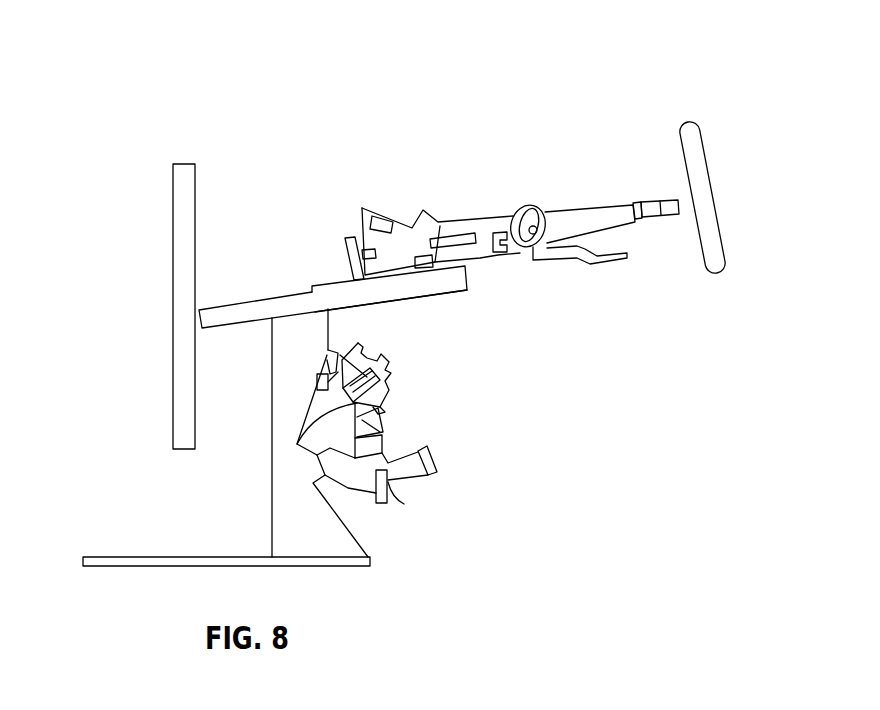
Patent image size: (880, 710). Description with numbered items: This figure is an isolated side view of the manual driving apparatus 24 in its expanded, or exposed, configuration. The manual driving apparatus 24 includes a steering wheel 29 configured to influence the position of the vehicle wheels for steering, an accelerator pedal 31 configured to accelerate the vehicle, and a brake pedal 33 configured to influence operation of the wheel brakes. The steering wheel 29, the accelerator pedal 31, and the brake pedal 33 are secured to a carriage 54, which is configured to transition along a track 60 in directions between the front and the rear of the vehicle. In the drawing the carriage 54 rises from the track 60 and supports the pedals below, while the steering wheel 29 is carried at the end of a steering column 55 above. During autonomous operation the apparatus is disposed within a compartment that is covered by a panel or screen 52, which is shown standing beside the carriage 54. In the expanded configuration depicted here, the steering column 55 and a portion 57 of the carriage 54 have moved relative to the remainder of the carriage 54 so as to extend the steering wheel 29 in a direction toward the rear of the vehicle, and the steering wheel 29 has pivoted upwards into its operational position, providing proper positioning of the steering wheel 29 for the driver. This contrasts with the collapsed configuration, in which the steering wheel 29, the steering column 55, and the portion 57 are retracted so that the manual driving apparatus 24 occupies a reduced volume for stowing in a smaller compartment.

The manual driving apparatus 24 is at (330, 267).
The steering wheel 29 is at (684, 118).
The accelerator pedal 31 is at (442, 472).
The brake pedal 33 is at (390, 496).
The panel or screen 52 is at (185, 163).
The carriage 54 is at (271, 492).
The steering column 55 is at (597, 206).
The portion of the carriage 57 is at (437, 293).
The track 60 is at (106, 556).